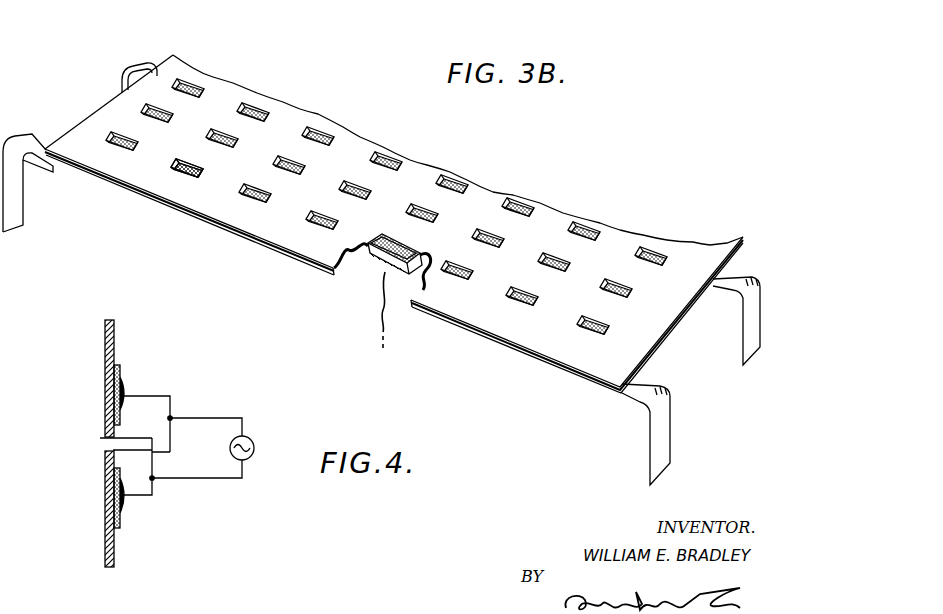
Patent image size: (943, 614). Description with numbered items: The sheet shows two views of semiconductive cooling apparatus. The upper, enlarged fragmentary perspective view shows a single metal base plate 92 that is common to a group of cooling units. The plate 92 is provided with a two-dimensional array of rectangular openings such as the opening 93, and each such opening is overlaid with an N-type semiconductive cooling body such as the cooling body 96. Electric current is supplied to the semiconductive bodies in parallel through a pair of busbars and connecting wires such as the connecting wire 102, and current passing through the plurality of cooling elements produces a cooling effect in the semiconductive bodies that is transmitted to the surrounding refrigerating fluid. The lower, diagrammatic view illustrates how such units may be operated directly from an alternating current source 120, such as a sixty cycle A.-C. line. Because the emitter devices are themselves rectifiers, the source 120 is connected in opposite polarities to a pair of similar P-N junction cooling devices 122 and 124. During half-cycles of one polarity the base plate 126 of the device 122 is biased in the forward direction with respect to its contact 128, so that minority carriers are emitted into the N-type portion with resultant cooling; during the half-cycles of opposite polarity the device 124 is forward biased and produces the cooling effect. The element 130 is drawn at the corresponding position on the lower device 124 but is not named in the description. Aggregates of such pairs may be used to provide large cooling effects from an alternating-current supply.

In FIG. 3B, the base plate 92 is at (125, 190).
In FIG. 3B, the rectangular opening 93 is at (199, 163).
In FIG. 3B, the semiconductive cooling body 96 is at (364, 263).
In FIG. 3B, the connecting wire 102 is at (383, 305).
In FIG. 4, the alternating current source 120 is at (252, 435).
In FIG. 4, the P-N junction cooling device 122 is at (91, 363).
In FIG. 4, the P-N junction cooling device 124 is at (91, 517).
In FIG. 4, the base plate 126 is at (104, 436).
In FIG. 4, the contact 128 is at (124, 384).
In FIG. 4, the electrode 130 is at (104, 462).